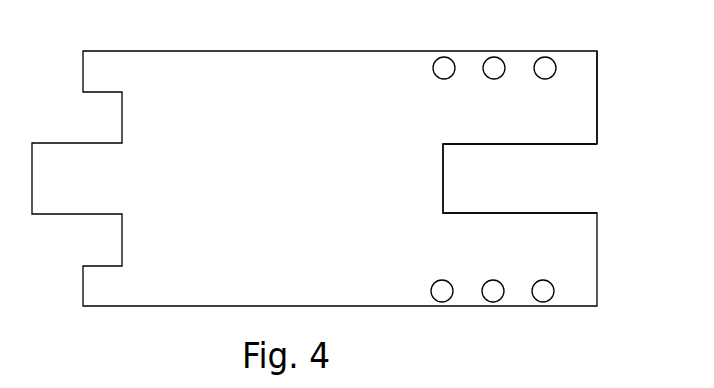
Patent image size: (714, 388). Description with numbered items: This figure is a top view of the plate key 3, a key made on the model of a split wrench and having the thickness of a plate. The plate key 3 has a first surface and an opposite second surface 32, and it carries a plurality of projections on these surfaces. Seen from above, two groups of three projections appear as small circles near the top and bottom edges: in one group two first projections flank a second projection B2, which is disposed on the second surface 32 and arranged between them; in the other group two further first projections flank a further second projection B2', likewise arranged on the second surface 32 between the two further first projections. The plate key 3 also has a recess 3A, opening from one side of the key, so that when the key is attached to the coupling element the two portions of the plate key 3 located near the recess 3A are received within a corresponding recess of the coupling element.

The plate key 3 is at (616, 57).
The second surface 32 is at (577, 117).
The recess 3A is at (563, 187).
The second projection B2 is at (481, 46).
The further second projection B2' is at (472, 313).